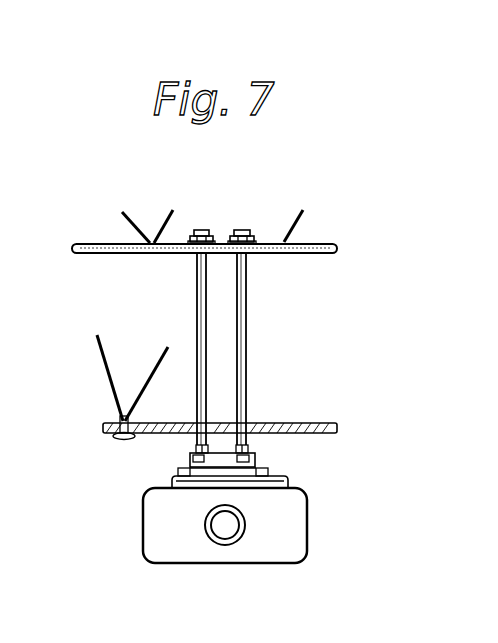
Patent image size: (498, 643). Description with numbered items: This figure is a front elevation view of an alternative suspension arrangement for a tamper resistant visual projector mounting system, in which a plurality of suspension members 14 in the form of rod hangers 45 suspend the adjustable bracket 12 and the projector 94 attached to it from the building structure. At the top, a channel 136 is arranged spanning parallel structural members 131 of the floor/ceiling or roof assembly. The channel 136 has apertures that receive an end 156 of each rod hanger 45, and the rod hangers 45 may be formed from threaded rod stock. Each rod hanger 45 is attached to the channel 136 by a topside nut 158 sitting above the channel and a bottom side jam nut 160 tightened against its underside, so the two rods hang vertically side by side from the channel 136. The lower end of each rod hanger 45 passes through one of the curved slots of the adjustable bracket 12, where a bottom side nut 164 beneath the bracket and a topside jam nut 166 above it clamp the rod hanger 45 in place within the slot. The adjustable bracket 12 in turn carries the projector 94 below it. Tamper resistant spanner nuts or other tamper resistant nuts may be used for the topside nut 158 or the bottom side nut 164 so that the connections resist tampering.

The adjustable bracket 12 is at (264, 465).
The suspension member 14 is at (206, 348).
The rod hanger 45 is at (205, 313).
The projector 94 is at (148, 539).
The structural member 131 is at (92, 255).
The channel 136 is at (255, 240).
The end of rod hanger 156 is at (204, 235).
The topside nut 158 is at (241, 231).
The bottom side jam nut 160 is at (192, 254).
The bottom side nut 164 is at (190, 458).
The topside jam nut 166 is at (250, 437).